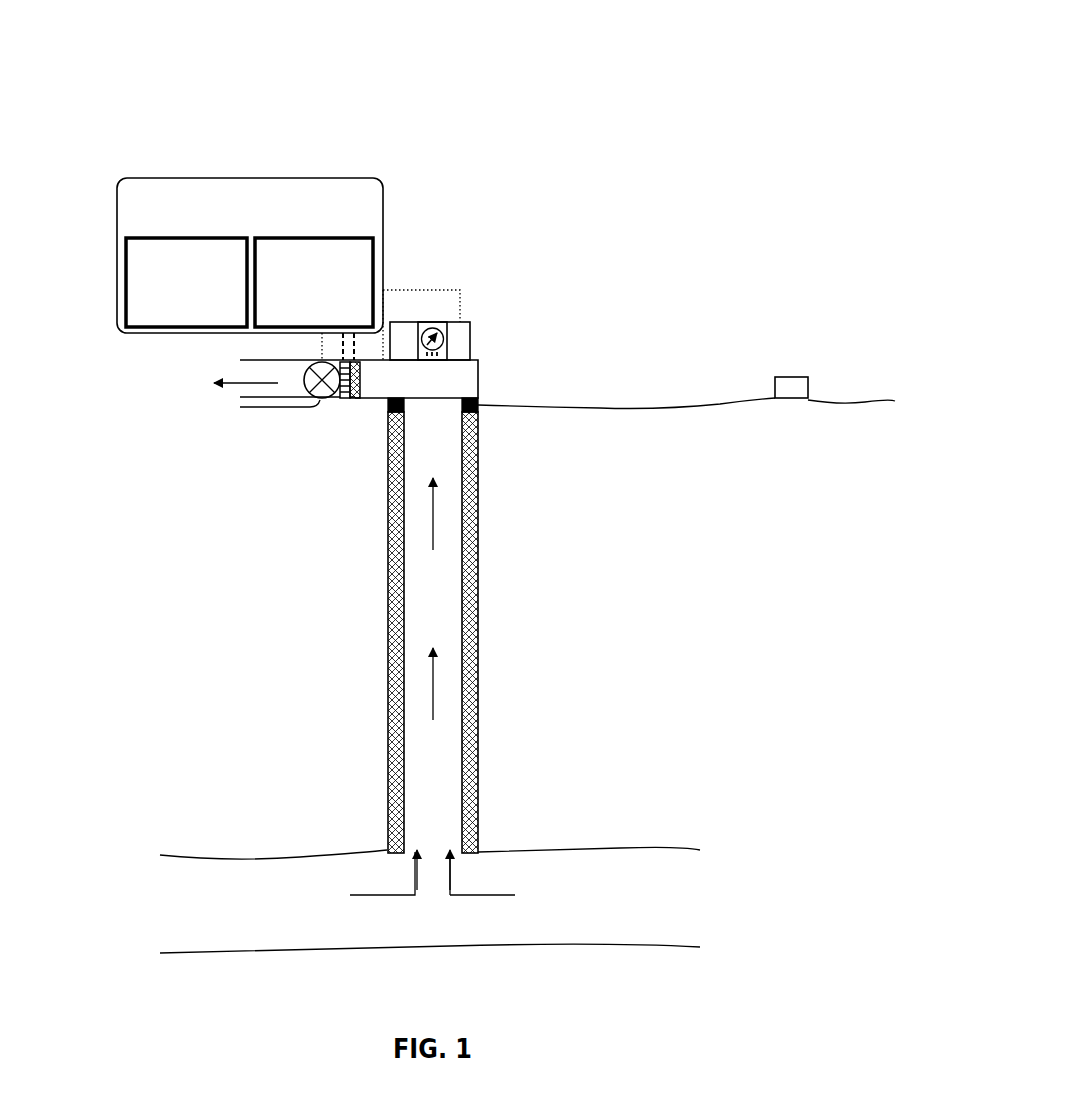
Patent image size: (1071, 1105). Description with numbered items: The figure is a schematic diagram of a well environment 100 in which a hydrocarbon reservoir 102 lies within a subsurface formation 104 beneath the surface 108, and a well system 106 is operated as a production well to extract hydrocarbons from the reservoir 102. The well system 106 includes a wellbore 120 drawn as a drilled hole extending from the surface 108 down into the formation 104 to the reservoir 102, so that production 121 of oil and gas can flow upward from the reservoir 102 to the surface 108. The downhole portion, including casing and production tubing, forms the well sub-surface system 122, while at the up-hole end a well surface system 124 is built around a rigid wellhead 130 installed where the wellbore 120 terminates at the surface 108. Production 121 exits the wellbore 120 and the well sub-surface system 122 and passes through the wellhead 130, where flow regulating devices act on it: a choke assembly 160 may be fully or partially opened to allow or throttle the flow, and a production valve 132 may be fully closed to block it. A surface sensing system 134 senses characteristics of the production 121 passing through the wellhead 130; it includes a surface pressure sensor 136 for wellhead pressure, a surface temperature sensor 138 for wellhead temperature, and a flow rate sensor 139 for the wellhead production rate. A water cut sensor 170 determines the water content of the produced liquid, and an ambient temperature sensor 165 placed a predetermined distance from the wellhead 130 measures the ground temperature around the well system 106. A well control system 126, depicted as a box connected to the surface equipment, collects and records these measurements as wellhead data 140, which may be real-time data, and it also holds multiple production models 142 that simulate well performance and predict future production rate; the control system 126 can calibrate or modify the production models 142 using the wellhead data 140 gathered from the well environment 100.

The well environment 100 is at (572, 50).
The hydrocarbon reservoir 102 is at (606, 916).
The subsurface formation 104 is at (602, 705).
The well system 106 is at (198, 135).
The surface 108 is at (588, 416).
The wellbore 120 is at (486, 557).
The production 121 is at (159, 408).
The well sub-surface system 122 is at (350, 638).
The well surface system 124 is at (648, 226).
The well control system 126 is at (160, 231).
The wellhead 130 is at (486, 392).
The production valve 132 is at (318, 400).
The surface sensing system 134 is at (482, 333).
The surface pressure sensor 136 is at (428, 320).
The surface temperature sensor 138 is at (460, 320).
The flow rate sensor 139 is at (400, 320).
The wellhead data 140 is at (202, 315).
The production models 142 is at (330, 315).
The choke assembly 160 is at (372, 410).
The ambient temperature sensor 165 is at (812, 410).
The water cut sensor 170 is at (346, 412).